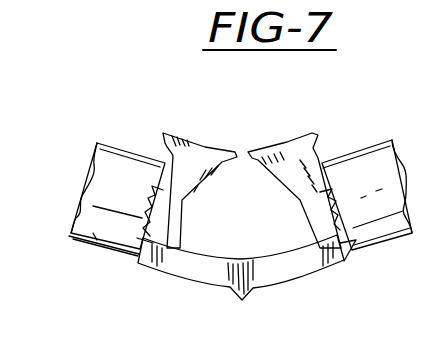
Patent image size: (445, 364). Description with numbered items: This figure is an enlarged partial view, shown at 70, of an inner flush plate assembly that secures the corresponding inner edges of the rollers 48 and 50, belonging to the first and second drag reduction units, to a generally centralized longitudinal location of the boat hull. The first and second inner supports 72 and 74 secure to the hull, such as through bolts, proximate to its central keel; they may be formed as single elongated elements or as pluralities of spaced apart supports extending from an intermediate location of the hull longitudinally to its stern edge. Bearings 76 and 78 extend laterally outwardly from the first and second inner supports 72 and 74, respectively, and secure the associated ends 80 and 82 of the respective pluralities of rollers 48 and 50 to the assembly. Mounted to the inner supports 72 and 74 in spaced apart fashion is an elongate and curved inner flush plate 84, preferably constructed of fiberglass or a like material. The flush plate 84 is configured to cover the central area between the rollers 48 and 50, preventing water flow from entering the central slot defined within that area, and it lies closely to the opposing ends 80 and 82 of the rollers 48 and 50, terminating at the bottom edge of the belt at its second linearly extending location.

The inner flush plate assembly 70 is at (171, 100).
The rollers 48 is at (94, 236).
The rollers 50 is at (381, 230).
The first inner support 72 is at (204, 148).
The second inner support 74 is at (288, 147).
The bearing 76 is at (146, 210).
The bearing 78 is at (346, 200).
The end of rollers 80 is at (143, 258).
The end of rollers 82 is at (347, 262).
The inner flush plate 84 is at (201, 272).